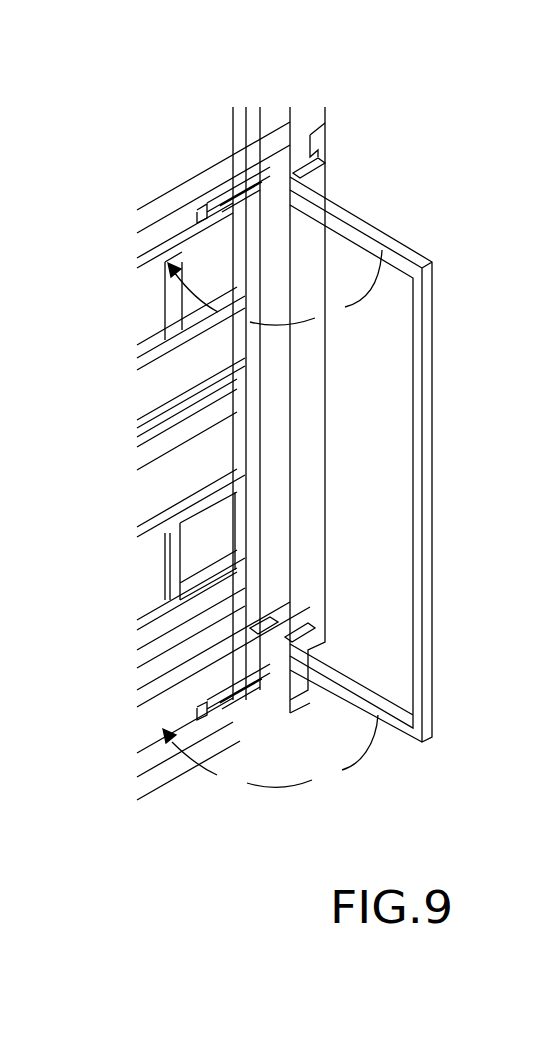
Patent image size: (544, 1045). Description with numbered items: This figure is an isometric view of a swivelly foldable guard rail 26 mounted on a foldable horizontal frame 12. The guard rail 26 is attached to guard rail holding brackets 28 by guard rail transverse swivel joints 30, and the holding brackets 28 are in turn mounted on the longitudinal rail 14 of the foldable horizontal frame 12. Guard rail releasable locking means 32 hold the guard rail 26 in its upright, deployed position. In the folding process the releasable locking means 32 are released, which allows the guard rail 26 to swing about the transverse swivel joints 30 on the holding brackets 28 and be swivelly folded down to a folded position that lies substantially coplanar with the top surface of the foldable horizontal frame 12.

The foldable horizontal frame 12 is at (340, 365).
The longitudinal rail 14 is at (318, 428).
The swivelly foldable guard rail 26 is at (434, 515).
The guard rail holding brackets 28 is at (293, 175).
The guard rail transverse swivel joints 30 is at (250, 632).
The guard rail releasable locking means 32 is at (275, 188).